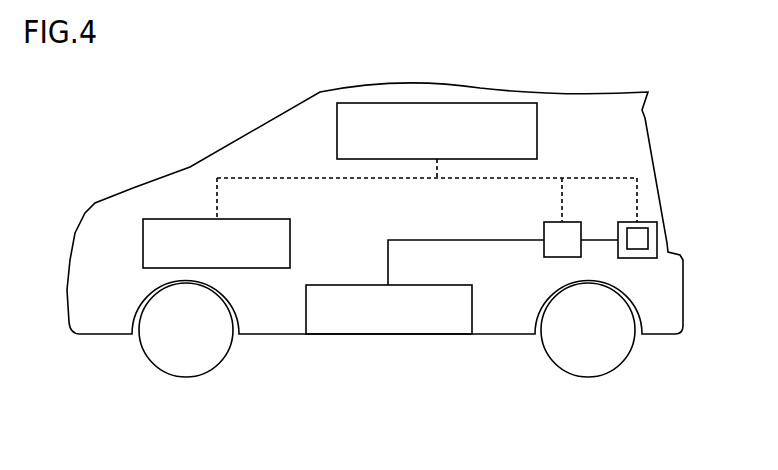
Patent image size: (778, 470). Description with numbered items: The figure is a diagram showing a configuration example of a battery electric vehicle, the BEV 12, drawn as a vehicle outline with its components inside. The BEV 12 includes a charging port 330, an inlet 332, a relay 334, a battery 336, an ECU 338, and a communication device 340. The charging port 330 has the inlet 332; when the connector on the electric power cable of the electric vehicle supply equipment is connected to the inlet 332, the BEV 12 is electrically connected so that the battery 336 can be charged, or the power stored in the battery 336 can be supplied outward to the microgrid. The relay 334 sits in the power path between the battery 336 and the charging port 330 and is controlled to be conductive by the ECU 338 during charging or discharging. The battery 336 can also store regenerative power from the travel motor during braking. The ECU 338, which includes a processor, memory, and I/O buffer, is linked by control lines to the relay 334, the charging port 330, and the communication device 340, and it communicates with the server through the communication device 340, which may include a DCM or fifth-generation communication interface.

The BEV 12 is at (552, 93).
The charging port 330 is at (647, 218).
The inlet 332 is at (648, 237).
The relay 334 is at (554, 222).
The battery 336 is at (427, 285).
The ECU 338 is at (245, 219).
The communication device 340 is at (337, 130).